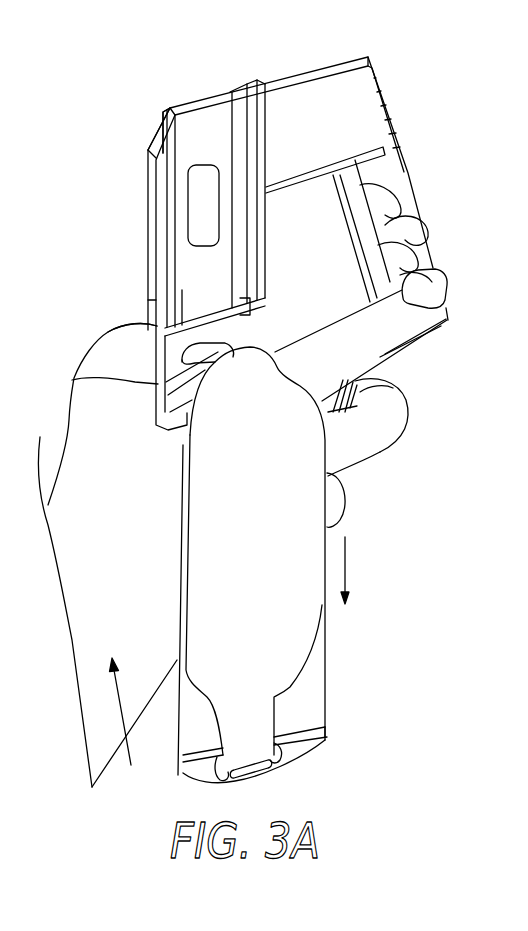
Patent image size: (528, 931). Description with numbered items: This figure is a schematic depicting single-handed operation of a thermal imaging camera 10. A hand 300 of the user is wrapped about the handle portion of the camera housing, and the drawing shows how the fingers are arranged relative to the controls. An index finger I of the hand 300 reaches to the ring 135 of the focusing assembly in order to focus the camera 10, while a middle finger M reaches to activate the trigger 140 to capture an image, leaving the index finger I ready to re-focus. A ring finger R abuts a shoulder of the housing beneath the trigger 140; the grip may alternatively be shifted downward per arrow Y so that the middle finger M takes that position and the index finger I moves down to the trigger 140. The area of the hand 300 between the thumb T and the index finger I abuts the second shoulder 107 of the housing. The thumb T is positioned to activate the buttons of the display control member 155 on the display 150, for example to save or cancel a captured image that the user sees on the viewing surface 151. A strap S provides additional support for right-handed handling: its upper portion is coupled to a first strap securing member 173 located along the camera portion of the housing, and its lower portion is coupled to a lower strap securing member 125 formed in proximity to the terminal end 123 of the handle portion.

The thermal imaging camera 10 is at (125, 78).
The display 150 is at (155, 170).
The viewing surface 151 is at (151, 148).
The ring 135 is at (410, 187).
The display control member 155 is at (151, 303).
The first strap securing member 173 is at (213, 343).
The second shoulder 107 is at (103, 379).
The trigger 140 is at (393, 388).
The terminal end 123 is at (287, 750).
The lower strap securing member 125 is at (253, 762).
The hand 300 is at (134, 722).
The thumb T is at (138, 323).
The index finger I is at (385, 334).
The middle finger M is at (378, 438).
The ring finger R is at (338, 503).
The strap S is at (262, 526).
The arrow Y is at (370, 579).